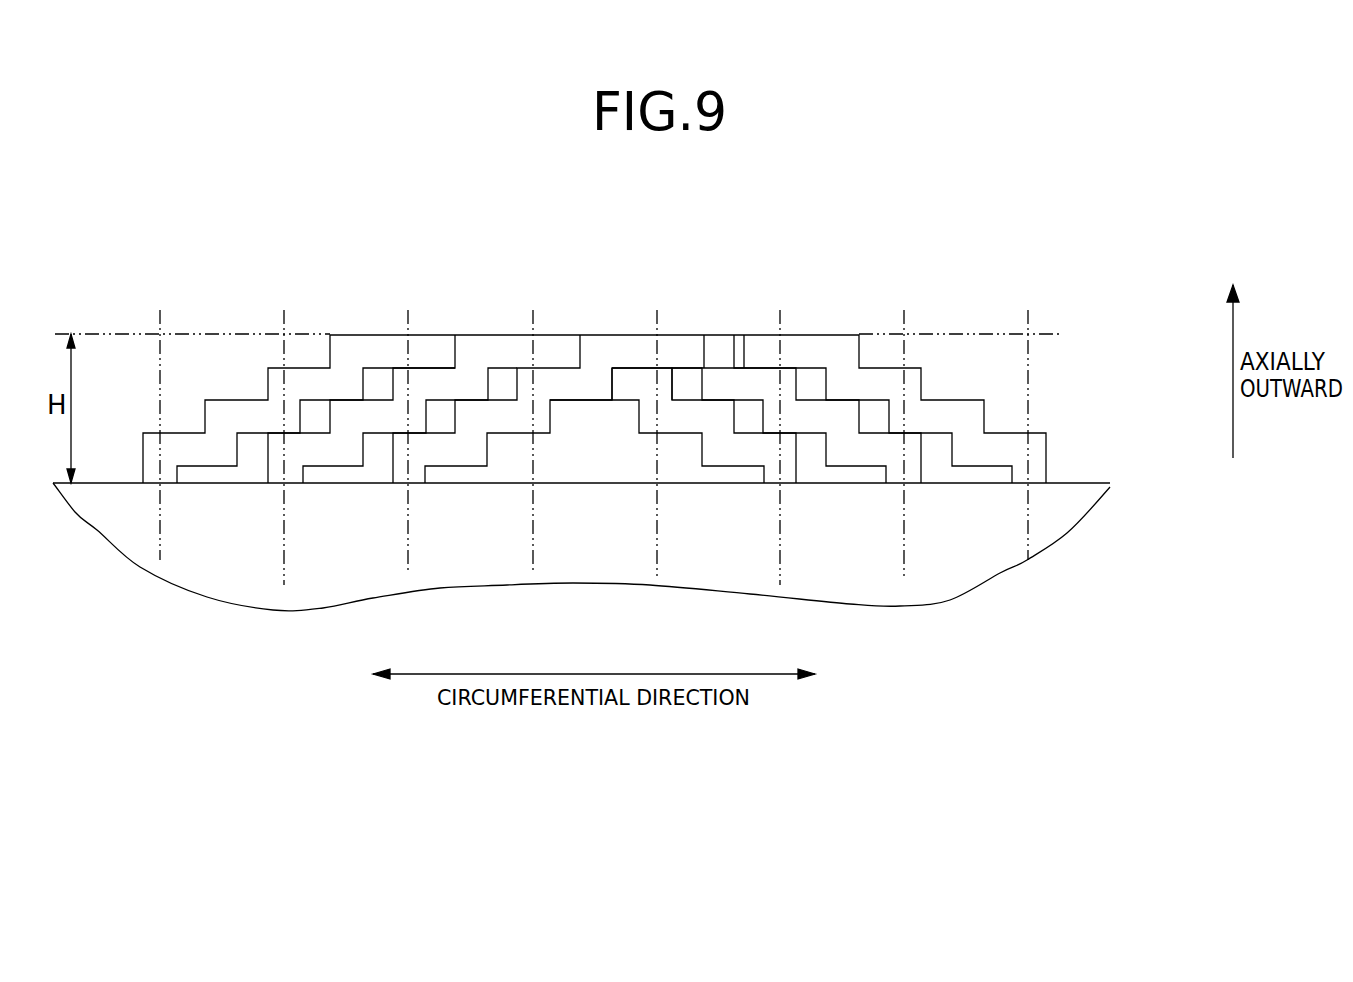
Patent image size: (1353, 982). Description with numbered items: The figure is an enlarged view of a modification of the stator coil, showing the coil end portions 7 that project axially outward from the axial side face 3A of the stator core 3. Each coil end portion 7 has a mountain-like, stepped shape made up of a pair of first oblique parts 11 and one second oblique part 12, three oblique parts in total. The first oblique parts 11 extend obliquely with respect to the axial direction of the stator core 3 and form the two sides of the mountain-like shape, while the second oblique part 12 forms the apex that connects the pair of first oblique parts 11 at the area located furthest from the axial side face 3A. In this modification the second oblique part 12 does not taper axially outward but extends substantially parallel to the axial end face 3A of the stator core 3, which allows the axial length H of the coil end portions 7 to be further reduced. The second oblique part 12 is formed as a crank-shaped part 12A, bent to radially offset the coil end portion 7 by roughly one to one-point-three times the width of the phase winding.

The stator core 3 is at (1055, 540).
The axial side face 3A is at (1068, 485).
The coil end portion 7 is at (488, 228).
The first oblique part 11 is at (178, 433).
The second oblique part 12 is at (428, 336).
The crank-shaped part 12A is at (725, 347).